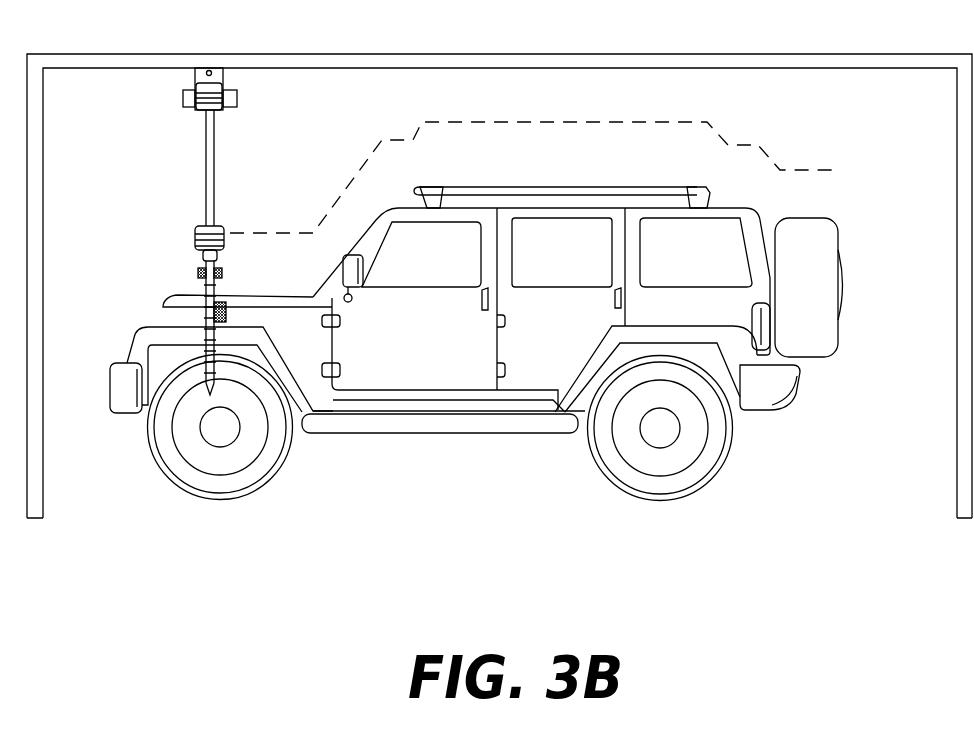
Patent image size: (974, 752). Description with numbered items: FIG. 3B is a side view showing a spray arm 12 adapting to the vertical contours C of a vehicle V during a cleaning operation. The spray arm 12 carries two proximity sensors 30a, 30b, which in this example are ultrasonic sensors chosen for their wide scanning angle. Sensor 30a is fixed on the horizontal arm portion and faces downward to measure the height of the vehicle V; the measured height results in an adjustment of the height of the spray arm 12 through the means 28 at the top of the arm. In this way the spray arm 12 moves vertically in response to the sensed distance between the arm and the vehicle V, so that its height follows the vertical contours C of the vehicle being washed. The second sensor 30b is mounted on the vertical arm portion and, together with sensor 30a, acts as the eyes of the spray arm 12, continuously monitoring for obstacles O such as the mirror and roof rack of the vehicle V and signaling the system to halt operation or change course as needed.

The spray arm 12 is at (154, 200).
The means 28 is at (183, 97).
The proximity sensor 30a is at (199, 272).
The second sensor 30b is at (227, 312).
The vertical contours C is at (370, 155).
The obstacles O is at (363, 272).
The vehicle V is at (386, 470).